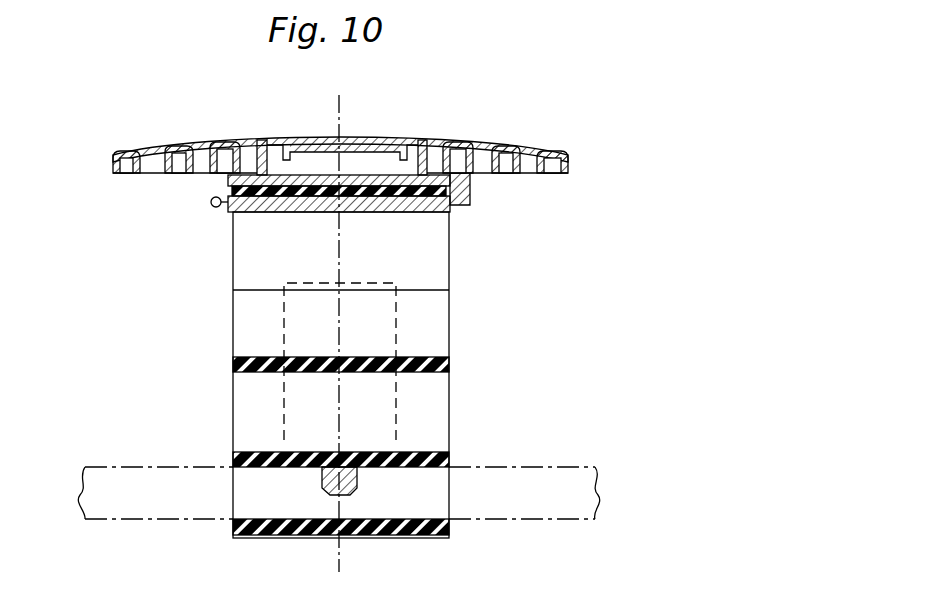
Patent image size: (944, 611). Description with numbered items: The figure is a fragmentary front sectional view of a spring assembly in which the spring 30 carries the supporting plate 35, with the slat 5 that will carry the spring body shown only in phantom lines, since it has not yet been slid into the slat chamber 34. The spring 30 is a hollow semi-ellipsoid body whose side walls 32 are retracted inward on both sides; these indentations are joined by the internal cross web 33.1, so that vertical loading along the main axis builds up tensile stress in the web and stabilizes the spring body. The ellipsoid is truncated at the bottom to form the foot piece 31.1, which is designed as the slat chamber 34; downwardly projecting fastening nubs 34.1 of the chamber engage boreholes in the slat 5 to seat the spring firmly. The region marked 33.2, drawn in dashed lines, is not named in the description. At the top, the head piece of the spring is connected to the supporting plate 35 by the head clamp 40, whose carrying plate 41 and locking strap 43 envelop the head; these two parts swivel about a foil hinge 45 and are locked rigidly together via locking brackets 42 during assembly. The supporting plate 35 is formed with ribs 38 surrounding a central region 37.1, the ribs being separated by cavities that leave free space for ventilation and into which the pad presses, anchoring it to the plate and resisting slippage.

The slat 5 is at (118, 465).
The spring 30 is at (323, 402).
The foot piece 31.1 is at (232, 522).
The side walls 32 is at (378, 260).
The internal cross web 33.1 is at (242, 372).
The opening 33.2 is at (396, 324).
The slat chamber 34 is at (455, 493).
The fastening nubs 34.1 is at (352, 490).
The supporting plate 35 is at (328, 111).
The central region 37.1 is at (311, 136).
The ribs 38 is at (225, 142).
The head clamp 40 is at (300, 214).
The carrying plate 41 is at (356, 172).
The locking brackets 42 is at (458, 198).
The locking strap 43 is at (406, 213).
The foil hinge 45 is at (210, 203).